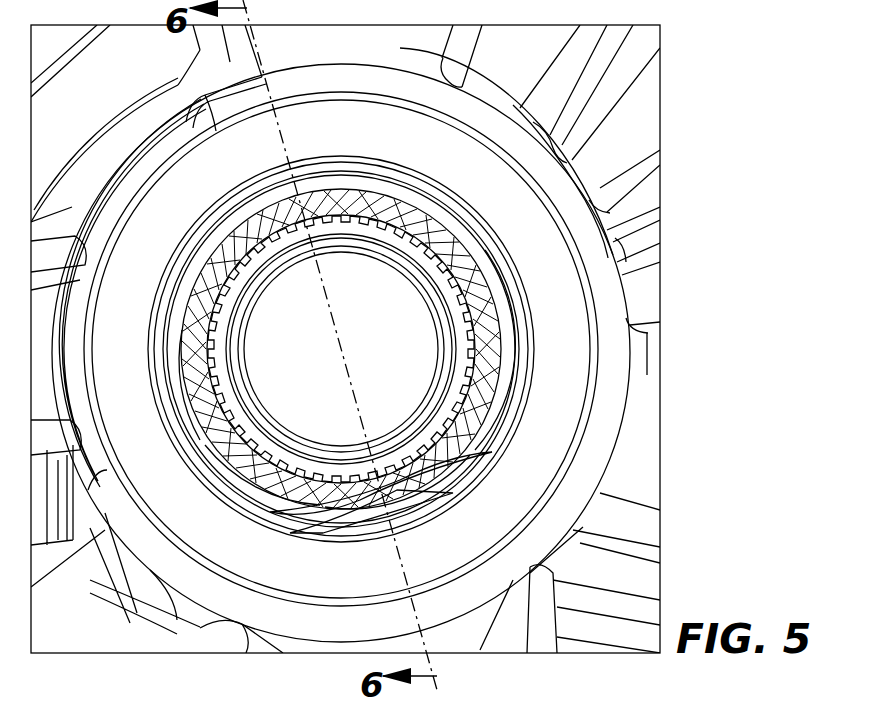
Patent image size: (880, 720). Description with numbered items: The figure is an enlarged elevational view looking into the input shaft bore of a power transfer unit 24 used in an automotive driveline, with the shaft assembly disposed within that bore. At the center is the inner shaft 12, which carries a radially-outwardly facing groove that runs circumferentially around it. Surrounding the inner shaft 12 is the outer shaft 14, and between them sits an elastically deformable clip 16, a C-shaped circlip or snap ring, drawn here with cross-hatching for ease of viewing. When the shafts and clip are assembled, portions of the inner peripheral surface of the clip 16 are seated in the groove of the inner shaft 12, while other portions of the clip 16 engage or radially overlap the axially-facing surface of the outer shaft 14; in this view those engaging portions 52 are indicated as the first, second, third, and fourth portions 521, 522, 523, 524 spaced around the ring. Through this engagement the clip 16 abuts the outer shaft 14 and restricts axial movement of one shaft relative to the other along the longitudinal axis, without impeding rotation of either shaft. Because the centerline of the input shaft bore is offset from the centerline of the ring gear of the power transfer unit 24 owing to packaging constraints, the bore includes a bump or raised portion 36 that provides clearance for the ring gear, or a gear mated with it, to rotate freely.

The inner shaft 12 is at (353, 232).
The outer shaft 14 is at (333, 192).
The elastically deformable clip 16 is at (413, 220).
The power transfer unit 24 is at (630, 121).
The raised portion 36 is at (418, 490).
The portions of the clip 52 is at (341, 349).
The first portion of the clip 521 is at (200, 350).
The second portion of the clip 522 is at (280, 492).
The third portion of the clip 523 is at (445, 460).
The fourth portion of the clip 524 is at (493, 320).